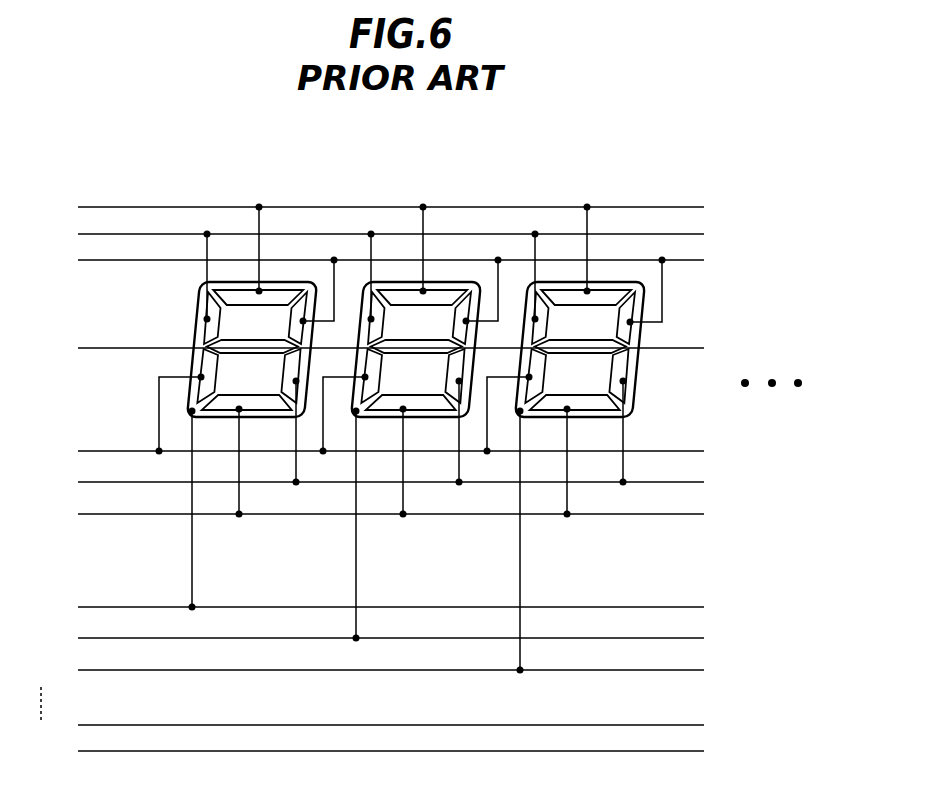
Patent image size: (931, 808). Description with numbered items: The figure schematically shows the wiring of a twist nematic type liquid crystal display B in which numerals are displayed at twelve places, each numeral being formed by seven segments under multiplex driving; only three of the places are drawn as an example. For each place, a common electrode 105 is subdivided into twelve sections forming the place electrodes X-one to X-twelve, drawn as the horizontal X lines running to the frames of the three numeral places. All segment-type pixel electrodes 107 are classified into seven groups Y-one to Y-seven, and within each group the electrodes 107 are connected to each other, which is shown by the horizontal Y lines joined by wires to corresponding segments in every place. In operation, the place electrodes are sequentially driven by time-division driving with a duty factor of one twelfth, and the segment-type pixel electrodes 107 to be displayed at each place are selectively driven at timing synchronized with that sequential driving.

The common electrode 105 is at (193, 363).
The segment-type pixel electrode 107 is at (203, 337).
The liquid crystal display B is at (731, 211).